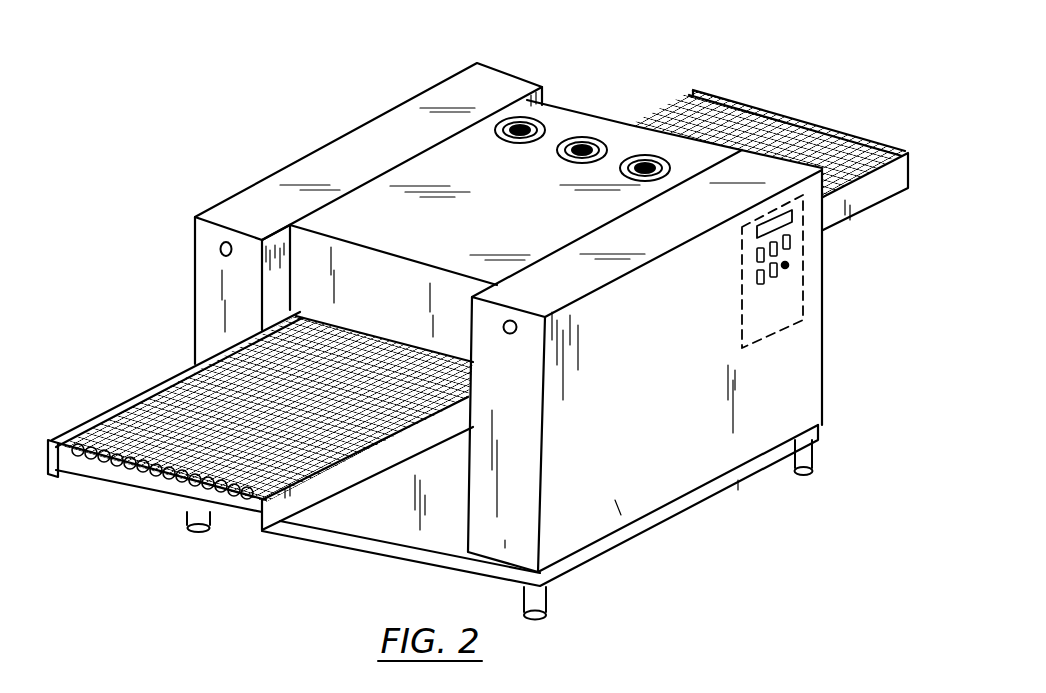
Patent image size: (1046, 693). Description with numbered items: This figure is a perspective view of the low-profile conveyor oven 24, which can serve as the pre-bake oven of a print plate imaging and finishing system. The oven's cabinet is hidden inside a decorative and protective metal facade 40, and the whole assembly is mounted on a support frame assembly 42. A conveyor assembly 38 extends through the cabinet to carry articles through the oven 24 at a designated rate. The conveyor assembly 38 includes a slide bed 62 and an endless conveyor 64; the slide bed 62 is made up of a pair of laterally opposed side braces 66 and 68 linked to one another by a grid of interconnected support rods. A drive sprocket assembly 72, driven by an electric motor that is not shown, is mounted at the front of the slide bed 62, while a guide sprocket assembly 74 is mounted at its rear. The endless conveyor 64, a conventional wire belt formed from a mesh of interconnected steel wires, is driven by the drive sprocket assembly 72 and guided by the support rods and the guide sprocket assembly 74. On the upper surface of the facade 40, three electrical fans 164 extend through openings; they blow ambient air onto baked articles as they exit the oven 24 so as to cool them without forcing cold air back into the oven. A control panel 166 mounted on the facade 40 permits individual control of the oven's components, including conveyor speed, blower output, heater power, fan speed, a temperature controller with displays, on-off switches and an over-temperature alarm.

The low-profile conveyor oven 24 is at (567, 60).
The conveyor assembly 38 is at (765, 106).
The metal facade 40 is at (818, 383).
The support frame assembly 42 is at (813, 459).
The slide bed 62 is at (880, 200).
The endless conveyor 64 is at (128, 410).
The side brace 66 is at (277, 517).
The side brace 68 is at (70, 460).
The drive sprocket assembly 72 is at (803, 132).
The guide sprocket assembly 74 is at (238, 504).
The electrical fans 164 is at (643, 163).
The control panel 166 is at (802, 289).